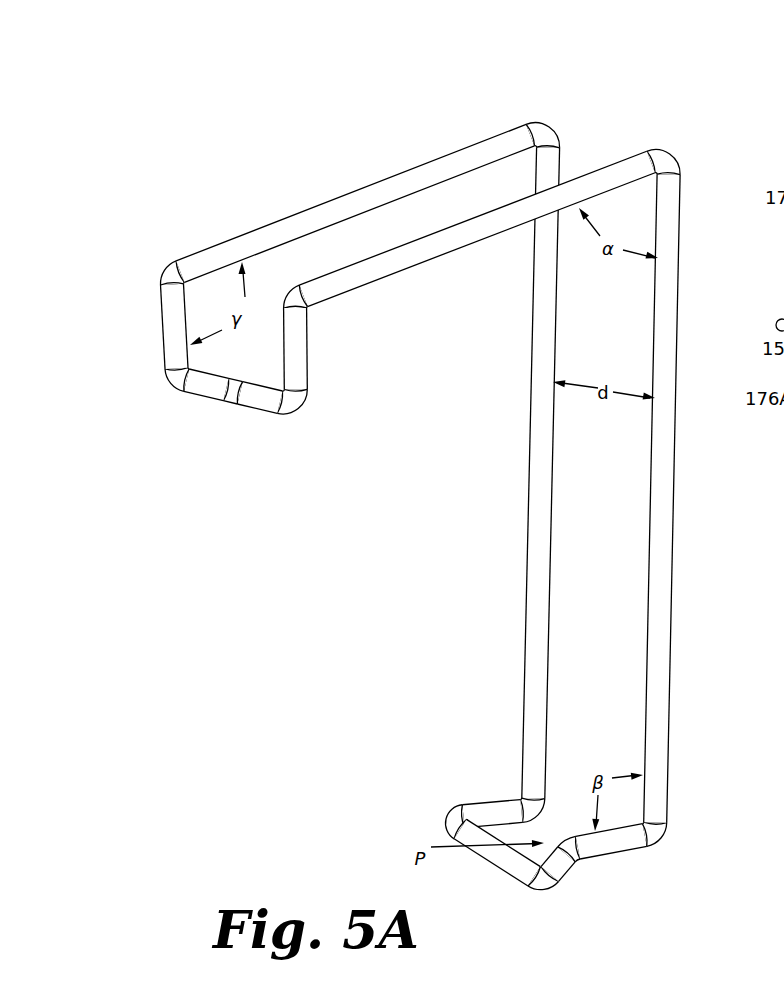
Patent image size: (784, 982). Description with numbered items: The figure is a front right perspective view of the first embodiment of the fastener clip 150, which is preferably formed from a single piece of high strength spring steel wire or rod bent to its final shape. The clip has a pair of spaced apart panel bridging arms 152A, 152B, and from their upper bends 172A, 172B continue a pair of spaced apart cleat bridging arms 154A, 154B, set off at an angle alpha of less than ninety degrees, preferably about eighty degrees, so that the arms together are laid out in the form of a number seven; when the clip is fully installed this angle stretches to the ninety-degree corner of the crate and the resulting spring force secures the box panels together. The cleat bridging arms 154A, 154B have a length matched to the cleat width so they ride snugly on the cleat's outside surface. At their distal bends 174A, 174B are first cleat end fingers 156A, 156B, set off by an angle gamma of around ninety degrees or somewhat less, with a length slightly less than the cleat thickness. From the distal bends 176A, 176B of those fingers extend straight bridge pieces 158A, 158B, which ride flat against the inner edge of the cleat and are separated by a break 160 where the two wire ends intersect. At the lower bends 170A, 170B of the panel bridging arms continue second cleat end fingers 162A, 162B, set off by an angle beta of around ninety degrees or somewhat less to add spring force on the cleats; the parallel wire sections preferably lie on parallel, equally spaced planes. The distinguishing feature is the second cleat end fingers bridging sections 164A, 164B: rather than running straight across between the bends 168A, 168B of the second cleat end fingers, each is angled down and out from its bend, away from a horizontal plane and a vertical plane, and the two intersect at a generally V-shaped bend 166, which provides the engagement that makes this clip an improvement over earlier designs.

The fastener clip 150 is at (428, 590).
The panel bridging arm 152A is at (667, 508).
The panel bridging arm 152B is at (538, 490).
The cleat bridging arm 154A is at (441, 254).
The cleat bridging arm 154B is at (407, 173).
The first cleat end finger 156A is at (308, 365).
The first cleat end finger 156B is at (164, 327).
The bridge piece 158A is at (263, 408).
The bridge piece 158B is at (202, 398).
The break 160 is at (233, 404).
The second cleat end finger 162A is at (620, 845).
The second cleat end finger 162B is at (497, 812).
The second cleat end fingers bridging section 164A is at (556, 872).
The second cleat end fingers bridging section 164B is at (494, 860).
The V-shaped bend 166 is at (531, 888).
The bend 168A is at (580, 852).
The bend 168B is at (446, 823).
The lower bend 170A is at (668, 832).
The lower bend 170B is at (563, 805).
The upper bend 172A is at (677, 162).
The upper bend 172B is at (554, 132).
The distal bend 174A is at (308, 311).
The distal bend 174B is at (168, 274).
The distal bend 176A is at (299, 414).
The distal bend 176B is at (168, 385).